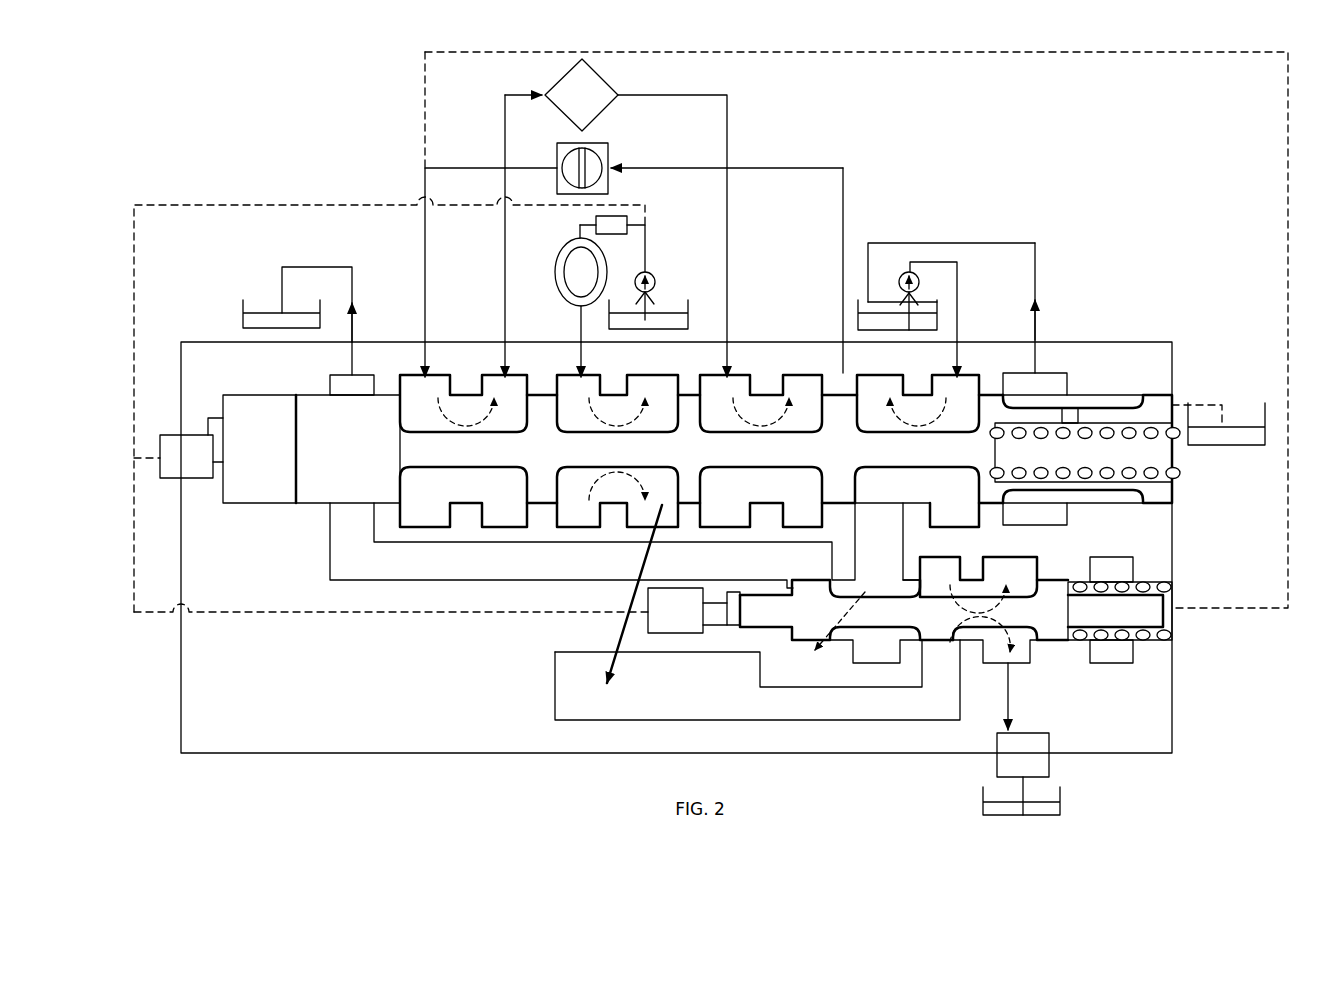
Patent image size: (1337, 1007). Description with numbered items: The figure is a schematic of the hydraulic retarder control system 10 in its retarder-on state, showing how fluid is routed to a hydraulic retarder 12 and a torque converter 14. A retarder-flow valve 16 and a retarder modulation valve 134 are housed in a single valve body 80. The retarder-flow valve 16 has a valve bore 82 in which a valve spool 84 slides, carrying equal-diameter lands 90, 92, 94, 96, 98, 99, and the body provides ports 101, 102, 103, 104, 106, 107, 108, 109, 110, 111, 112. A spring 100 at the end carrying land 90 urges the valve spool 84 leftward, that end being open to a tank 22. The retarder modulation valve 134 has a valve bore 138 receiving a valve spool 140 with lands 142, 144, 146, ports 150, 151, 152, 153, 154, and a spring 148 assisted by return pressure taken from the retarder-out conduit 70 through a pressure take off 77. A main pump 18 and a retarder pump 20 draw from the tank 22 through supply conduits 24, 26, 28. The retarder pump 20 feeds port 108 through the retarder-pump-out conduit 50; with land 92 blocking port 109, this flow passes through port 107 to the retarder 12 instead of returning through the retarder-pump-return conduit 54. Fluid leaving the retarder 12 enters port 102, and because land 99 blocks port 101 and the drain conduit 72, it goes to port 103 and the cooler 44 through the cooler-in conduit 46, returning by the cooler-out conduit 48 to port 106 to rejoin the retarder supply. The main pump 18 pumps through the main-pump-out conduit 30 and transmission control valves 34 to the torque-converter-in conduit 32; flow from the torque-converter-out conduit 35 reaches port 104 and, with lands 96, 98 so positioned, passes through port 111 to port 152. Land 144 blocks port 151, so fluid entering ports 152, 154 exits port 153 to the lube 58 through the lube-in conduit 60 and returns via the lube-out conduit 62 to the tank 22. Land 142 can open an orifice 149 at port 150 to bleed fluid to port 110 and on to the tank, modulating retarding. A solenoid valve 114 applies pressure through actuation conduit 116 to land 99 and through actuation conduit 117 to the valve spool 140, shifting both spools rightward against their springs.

The hydraulic retarder control system 10 is at (355, 122).
The hydraulic retarder 12 is at (610, 150).
The torque converter 14 is at (557, 268).
The retarder-flow valve 16 is at (226, 386).
The main pump 18 is at (656, 276).
The retarder pump 20 is at (905, 272).
The tank 22 is at (244, 306).
The supply conduit 24 is at (652, 303).
The supply conduit 26 is at (888, 302).
The supply conduit 28 is at (910, 302).
The main-pump-out conduit 30 is at (645, 240).
The torque-converter-in conduit 32 is at (580, 228).
The transmission control valves 34 is at (612, 224).
The torque-converter-out conduit 35 is at (575, 326).
The cooler 44 is at (581, 95).
The cooler-in conduit 46 is at (540, 92).
The cooler-out conduit 48 is at (727, 95).
The retarder-pump-out conduit 50 is at (936, 262).
The retarder-pump-return conduit 54 is at (1003, 243).
The lube 58 is at (1023, 755).
The lube-in conduit 60 is at (1012, 705).
The lube-out conduit 62 is at (1042, 790).
The retarder-out conduit 70 is at (455, 168).
The drain conduit 72 is at (318, 267).
The pressure take off 77 is at (1290, 297).
The valve body 80 is at (210, 377).
The valve bore 82 is at (1150, 401).
The valve spool 84 is at (320, 487).
The land 90 is at (1152, 402).
The land 92 is at (1068, 449).
The land 94 is at (778, 451).
The land 96 is at (628, 451).
The land 98 is at (478, 451).
The land 99 is at (348, 439).
The spring 100 is at (1176, 475).
The port 101 is at (356, 362).
The port 102 is at (427, 370).
The port 103 is at (505, 368).
The port 104 is at (578, 366).
The port 106 is at (730, 366).
The port 107 is at (846, 368).
The port 108 is at (960, 366).
The port 109 is at (1030, 372).
The port 110 is at (338, 513).
The port 111 is at (642, 520).
The port 112 is at (688, 477).
The solenoid valve 114 is at (430, 534).
The actuation conduit 116 is at (215, 428).
The actuation conduit 117 is at (710, 620).
The retarder modulation valve 134 is at (1178, 620).
The valve bore 138 is at (1074, 642).
The valve spool 140 is at (748, 614).
The land 142 is at (846, 621).
The land 144 is at (985, 610).
The land 146 is at (1104, 610).
The spring 148 is at (1175, 587).
The orifice 149 is at (838, 630).
The port 150 is at (838, 578).
The port 151 is at (900, 560).
The port 152 is at (938, 702).
The port 153 is at (1012, 672).
The port 154 is at (1115, 568).